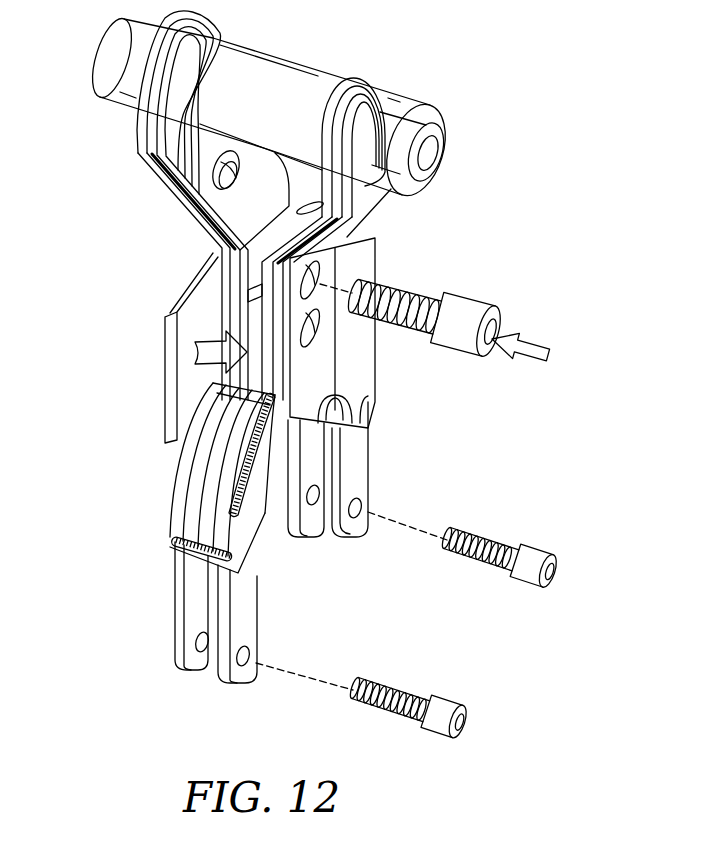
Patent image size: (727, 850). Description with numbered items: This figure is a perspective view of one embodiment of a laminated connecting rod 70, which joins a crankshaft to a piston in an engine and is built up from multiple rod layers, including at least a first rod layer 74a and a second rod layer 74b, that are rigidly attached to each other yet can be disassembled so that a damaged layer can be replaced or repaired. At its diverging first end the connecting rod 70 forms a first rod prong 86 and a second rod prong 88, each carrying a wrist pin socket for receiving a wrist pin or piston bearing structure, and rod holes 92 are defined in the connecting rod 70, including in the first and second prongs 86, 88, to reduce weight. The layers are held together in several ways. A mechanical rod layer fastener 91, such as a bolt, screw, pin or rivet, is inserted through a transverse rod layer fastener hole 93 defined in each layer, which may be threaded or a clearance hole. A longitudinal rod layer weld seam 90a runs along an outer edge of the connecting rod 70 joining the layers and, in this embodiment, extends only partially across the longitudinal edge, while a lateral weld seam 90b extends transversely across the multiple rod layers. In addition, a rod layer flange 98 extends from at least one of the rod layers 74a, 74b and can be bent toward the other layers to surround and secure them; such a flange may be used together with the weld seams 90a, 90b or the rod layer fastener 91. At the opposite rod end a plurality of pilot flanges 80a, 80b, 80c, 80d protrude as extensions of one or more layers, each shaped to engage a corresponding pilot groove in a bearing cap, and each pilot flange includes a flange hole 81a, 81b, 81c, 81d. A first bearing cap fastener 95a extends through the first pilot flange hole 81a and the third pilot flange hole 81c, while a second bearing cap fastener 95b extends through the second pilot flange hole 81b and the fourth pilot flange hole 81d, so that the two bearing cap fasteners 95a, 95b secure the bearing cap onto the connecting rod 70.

The connecting rod 70 is at (490, 127).
The first rod layer 74a is at (185, 462).
The second rod layer 74b is at (190, 495).
The first pilot flange 80a is at (370, 446).
The second pilot flange 80b is at (257, 623).
The third pilot flange 80c is at (280, 522).
The fourth pilot flange 80d is at (178, 620).
The first pilot flange hole 81a is at (361, 509).
The second pilot flange hole 81b is at (248, 666).
The third pilot flange hole 81c is at (316, 506).
The fourth pilot flange hole 81d is at (204, 652).
The first rod prong 86 is at (370, 234).
The second rod prong 88 is at (140, 190).
The longitudinal rod layer weld seam 90a is at (232, 498).
The lateral weld seam 90b is at (170, 538).
The rod layer fastener 91 is at (445, 300).
The rod hole 92 is at (225, 185).
The rod layer fastener hole 93 is at (314, 293).
The first bearing cap fastener 95a is at (505, 548).
The second bearing cap fastener 95b is at (408, 698).
The rod layer flange 98 is at (170, 345).